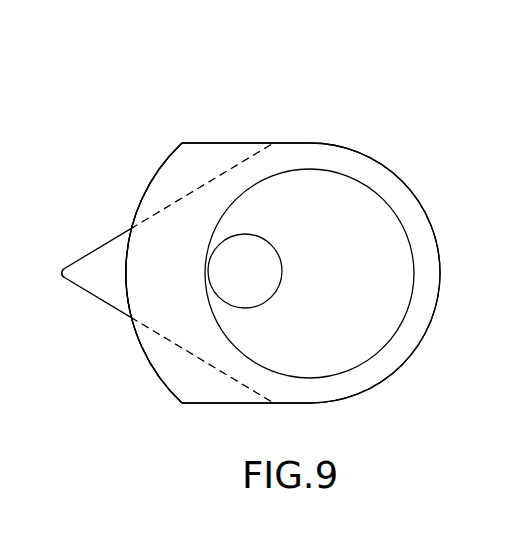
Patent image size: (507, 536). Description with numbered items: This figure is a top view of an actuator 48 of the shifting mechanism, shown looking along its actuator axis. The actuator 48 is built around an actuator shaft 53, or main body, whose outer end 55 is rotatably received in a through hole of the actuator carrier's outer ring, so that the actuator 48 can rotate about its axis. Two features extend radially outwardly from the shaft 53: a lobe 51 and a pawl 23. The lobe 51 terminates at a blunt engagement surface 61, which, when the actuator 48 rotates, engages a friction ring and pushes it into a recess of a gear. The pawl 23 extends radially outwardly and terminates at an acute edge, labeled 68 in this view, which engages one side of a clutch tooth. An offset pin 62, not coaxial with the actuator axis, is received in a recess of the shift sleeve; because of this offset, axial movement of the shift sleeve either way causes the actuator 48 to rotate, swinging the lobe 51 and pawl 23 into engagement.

The actuator 48 is at (323, 89).
The lobe 51 is at (159, 150).
The actuator shaft 53 is at (365, 178).
The outer end 55 is at (395, 210).
The blunt engagement surface 61 is at (145, 191).
The offset pin 62 is at (253, 234).
The tip 68 is at (61, 273).
The pawl 23 is at (98, 307).